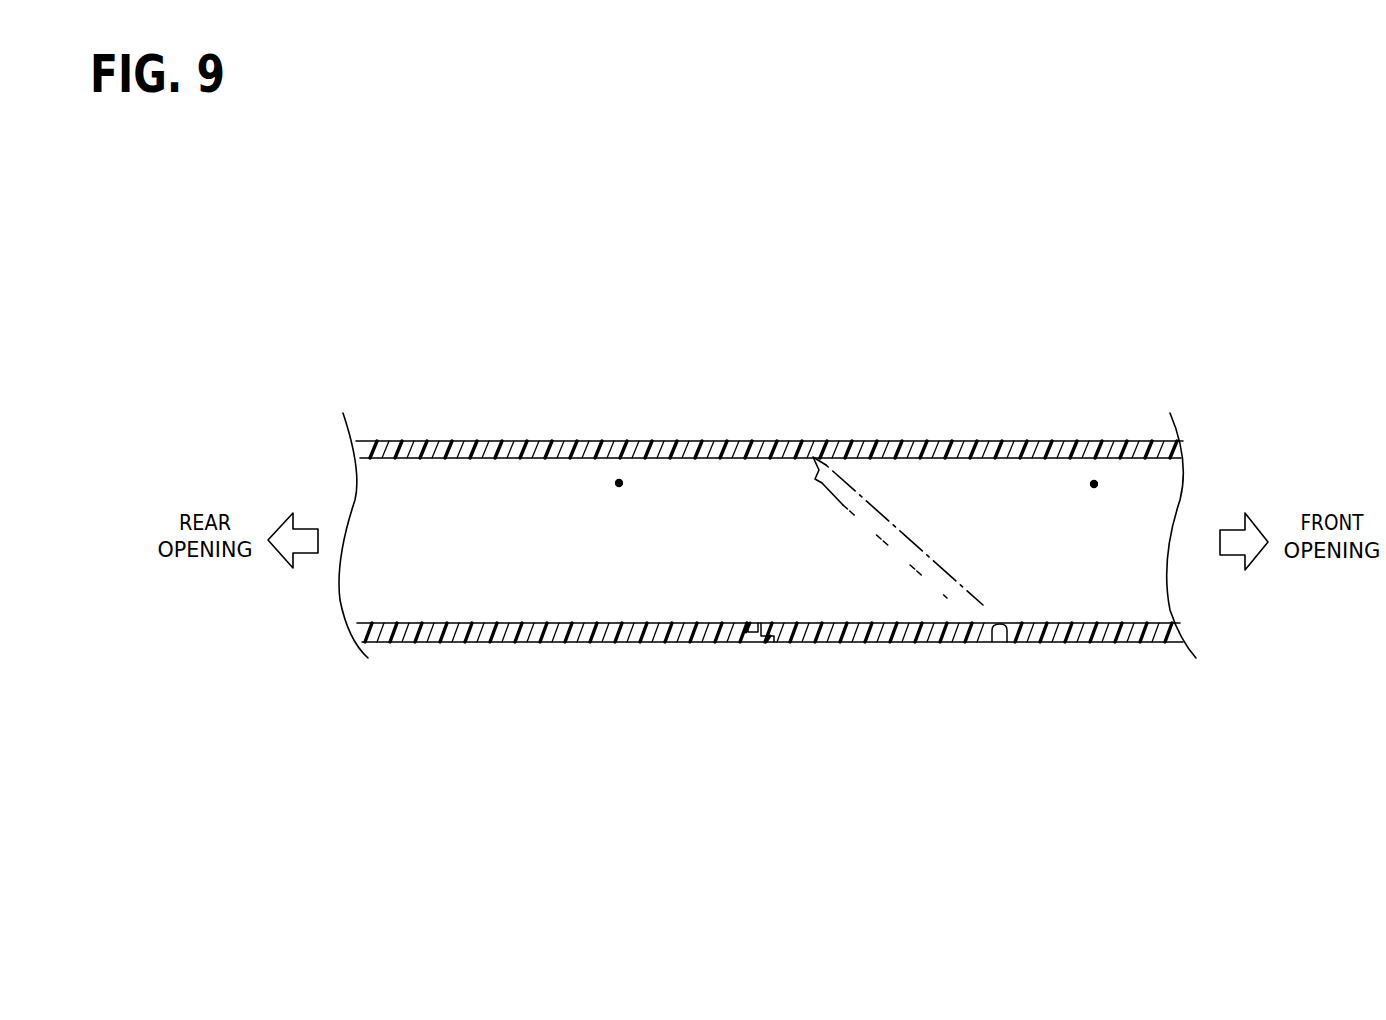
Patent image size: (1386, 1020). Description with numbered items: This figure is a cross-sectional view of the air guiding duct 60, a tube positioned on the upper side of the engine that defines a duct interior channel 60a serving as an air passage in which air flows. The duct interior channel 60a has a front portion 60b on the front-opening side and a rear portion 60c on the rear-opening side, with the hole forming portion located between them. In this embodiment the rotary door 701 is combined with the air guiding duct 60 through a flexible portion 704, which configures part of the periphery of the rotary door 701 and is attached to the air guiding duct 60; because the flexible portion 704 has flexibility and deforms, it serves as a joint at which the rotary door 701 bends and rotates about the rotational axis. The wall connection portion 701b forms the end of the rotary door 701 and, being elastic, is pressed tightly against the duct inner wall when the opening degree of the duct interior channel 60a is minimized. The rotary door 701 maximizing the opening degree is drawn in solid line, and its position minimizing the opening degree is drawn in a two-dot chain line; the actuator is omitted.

The air guiding duct 60 is at (412, 643).
The duct interior channel 60a is at (990, 353).
The front portion 60b is at (1094, 484).
The rear portion 60c is at (619, 483).
The rotary door 701 is at (832, 644).
The wall connection portion 701b is at (764, 622).
The flexible portion 704 is at (1001, 628).